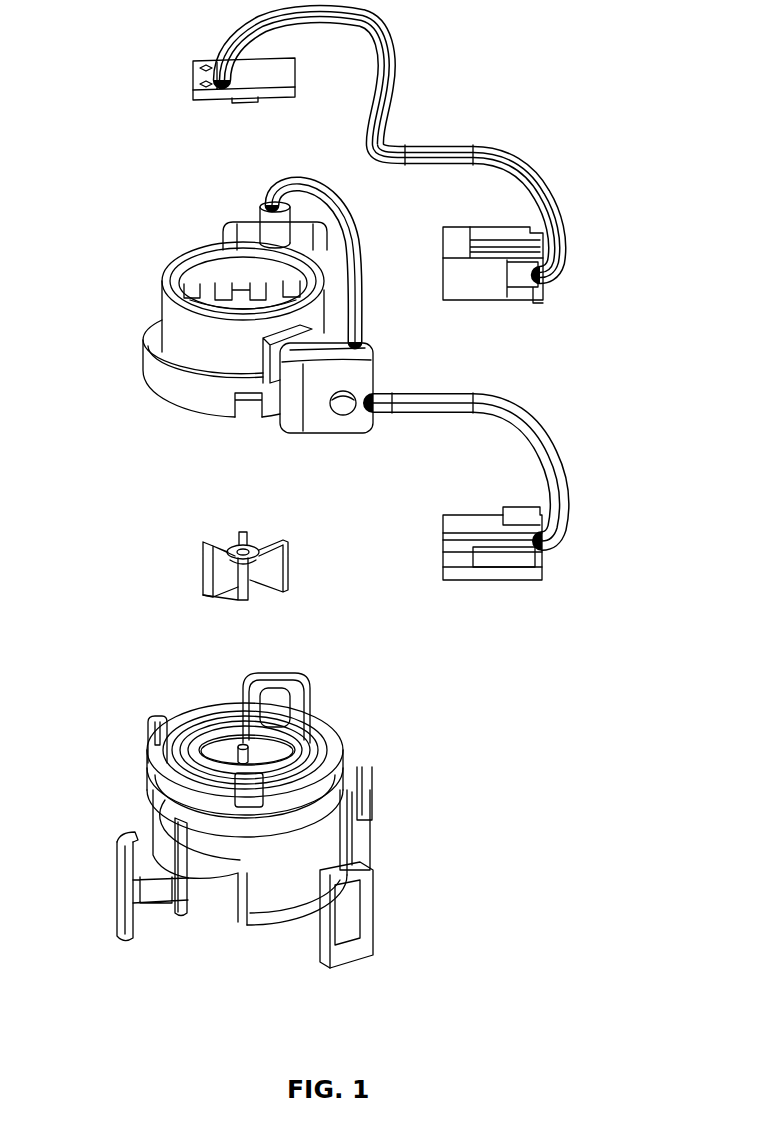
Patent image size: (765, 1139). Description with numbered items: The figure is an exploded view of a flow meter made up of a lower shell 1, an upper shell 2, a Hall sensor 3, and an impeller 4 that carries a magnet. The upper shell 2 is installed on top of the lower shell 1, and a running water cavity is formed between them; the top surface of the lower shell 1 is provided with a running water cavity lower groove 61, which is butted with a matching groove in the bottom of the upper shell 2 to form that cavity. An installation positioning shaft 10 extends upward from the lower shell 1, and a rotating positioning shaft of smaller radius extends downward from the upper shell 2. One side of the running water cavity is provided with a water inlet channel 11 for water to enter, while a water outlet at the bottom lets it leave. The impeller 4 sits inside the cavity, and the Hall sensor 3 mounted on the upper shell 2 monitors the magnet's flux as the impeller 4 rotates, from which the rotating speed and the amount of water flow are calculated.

The lower shell 1 is at (150, 798).
The upper shell 2 is at (183, 325).
The Hall sensor 3 is at (190, 77).
The impeller 4 is at (190, 552).
The installation positioning shaft 10 is at (243, 746).
The water inlet channel 11 is at (278, 703).
The running water cavity lower groove 61 is at (270, 752).